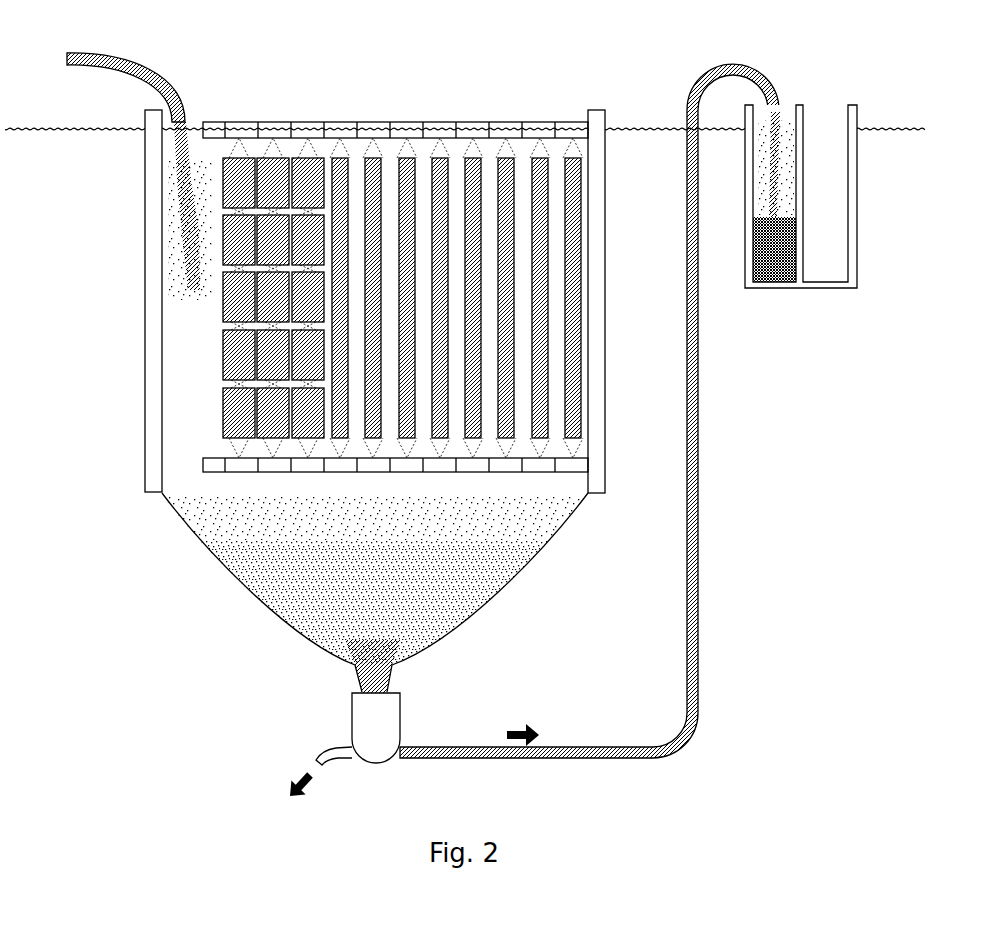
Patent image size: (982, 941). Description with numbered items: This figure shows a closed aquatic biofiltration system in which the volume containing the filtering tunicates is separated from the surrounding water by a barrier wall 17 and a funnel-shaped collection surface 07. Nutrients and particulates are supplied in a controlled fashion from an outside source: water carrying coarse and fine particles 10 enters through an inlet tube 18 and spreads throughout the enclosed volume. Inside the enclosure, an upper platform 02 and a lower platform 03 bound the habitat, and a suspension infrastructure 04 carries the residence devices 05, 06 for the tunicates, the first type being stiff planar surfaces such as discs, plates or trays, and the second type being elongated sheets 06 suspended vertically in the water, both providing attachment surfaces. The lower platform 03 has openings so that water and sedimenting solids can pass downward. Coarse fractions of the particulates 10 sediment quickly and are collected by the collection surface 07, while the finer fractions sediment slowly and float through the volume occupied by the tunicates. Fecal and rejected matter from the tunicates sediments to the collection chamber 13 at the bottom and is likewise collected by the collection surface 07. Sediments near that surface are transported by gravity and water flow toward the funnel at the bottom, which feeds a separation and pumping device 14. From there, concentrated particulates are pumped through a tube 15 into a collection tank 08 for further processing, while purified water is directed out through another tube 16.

The upper platform 02 is at (545, 122).
The lower platform 03 is at (552, 472).
The suspension infrastructure 04 is at (372, 145).
The residence devices 05 is at (273, 160).
The elongated sheets 06 is at (502, 157).
The collection surface 07 is at (247, 587).
The collection tank 08 is at (772, 292).
The particulates 10 is at (180, 183).
The collection chamber 13 is at (245, 505).
The separation and pumping device 14 is at (402, 718).
The tube 15 is at (702, 648).
The tube 16 is at (315, 748).
The barrier wall 17 is at (145, 307).
The inlet tube 18 is at (168, 82).